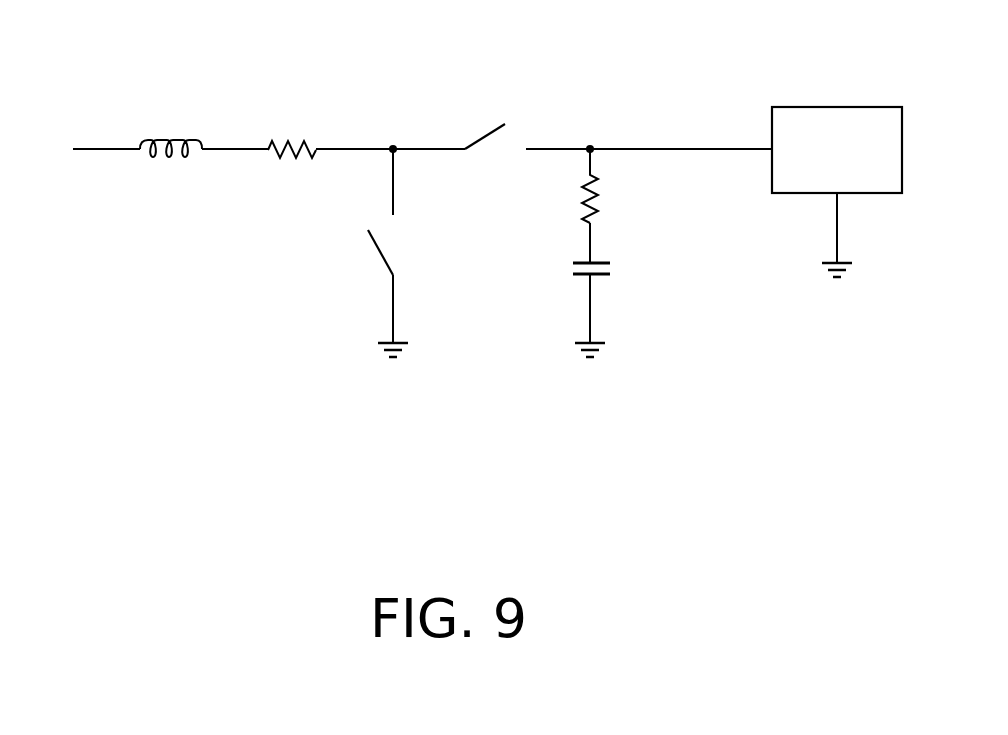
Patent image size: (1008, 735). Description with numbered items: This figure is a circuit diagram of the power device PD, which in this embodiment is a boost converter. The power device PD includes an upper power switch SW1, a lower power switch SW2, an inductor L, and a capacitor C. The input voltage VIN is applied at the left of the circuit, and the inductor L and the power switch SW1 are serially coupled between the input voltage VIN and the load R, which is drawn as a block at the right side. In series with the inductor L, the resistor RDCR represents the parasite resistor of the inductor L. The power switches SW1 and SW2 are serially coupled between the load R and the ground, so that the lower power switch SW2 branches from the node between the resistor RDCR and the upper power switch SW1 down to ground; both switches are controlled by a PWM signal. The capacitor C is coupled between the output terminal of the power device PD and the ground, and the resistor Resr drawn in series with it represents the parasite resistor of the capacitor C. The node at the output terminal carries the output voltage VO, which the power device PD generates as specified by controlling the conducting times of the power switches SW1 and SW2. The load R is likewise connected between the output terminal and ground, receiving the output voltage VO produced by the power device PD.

The input voltage VIN is at (83, 143).
The inductor L is at (171, 127).
The resistor RDCR is at (293, 126).
The upper power switch SW1 is at (476, 128).
The lower power switch SW2 is at (373, 257).
The output voltage VO is at (650, 122).
The resistor Resr is at (619, 186).
The capacitor C is at (602, 271).
The load R is at (810, 107).
The power device PD is at (755, 307).